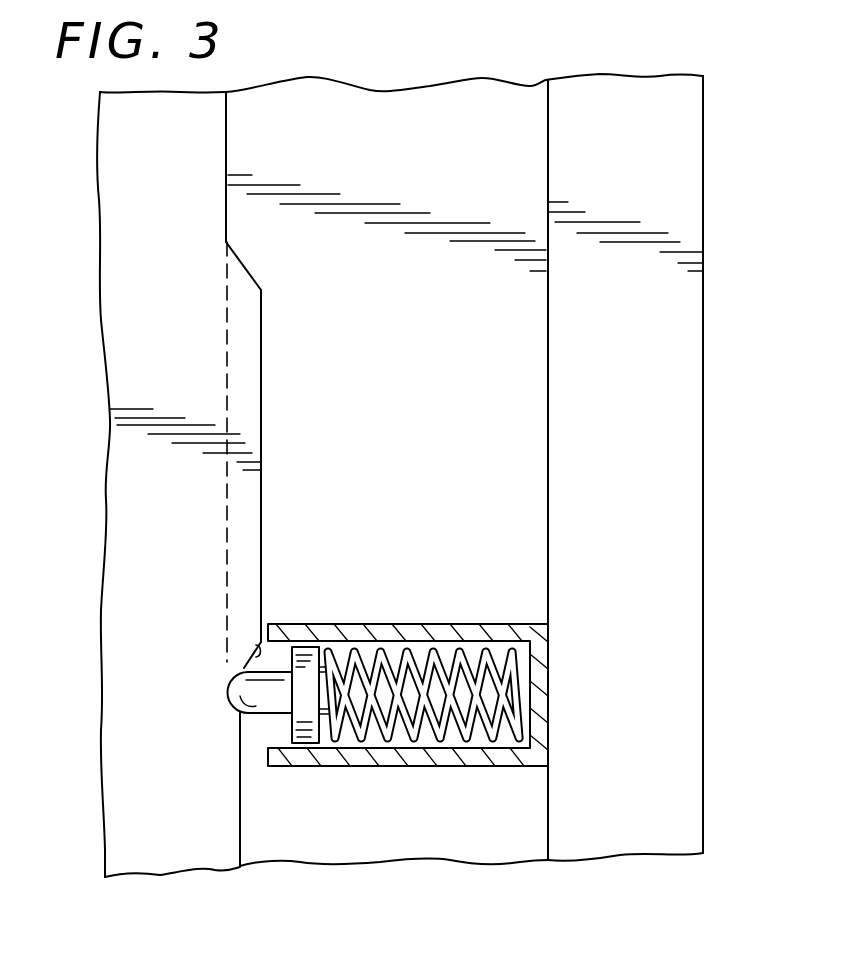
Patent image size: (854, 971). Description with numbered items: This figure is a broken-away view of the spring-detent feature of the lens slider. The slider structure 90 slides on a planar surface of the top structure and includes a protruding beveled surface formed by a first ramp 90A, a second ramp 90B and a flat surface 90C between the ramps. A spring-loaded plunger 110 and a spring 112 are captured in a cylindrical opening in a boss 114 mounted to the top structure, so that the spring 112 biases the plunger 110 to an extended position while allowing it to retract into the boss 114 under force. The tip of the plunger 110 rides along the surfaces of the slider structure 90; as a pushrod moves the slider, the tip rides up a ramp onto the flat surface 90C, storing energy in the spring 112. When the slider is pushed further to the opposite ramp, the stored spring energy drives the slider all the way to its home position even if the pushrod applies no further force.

The slider structure 90 is at (183, 222).
The first ramp 90A is at (247, 272).
The second ramp 90B is at (253, 656).
The flat surface 90C is at (262, 482).
The spring-loaded plunger 110 is at (243, 716).
The spring 112 is at (400, 742).
The boss 114 is at (442, 622).